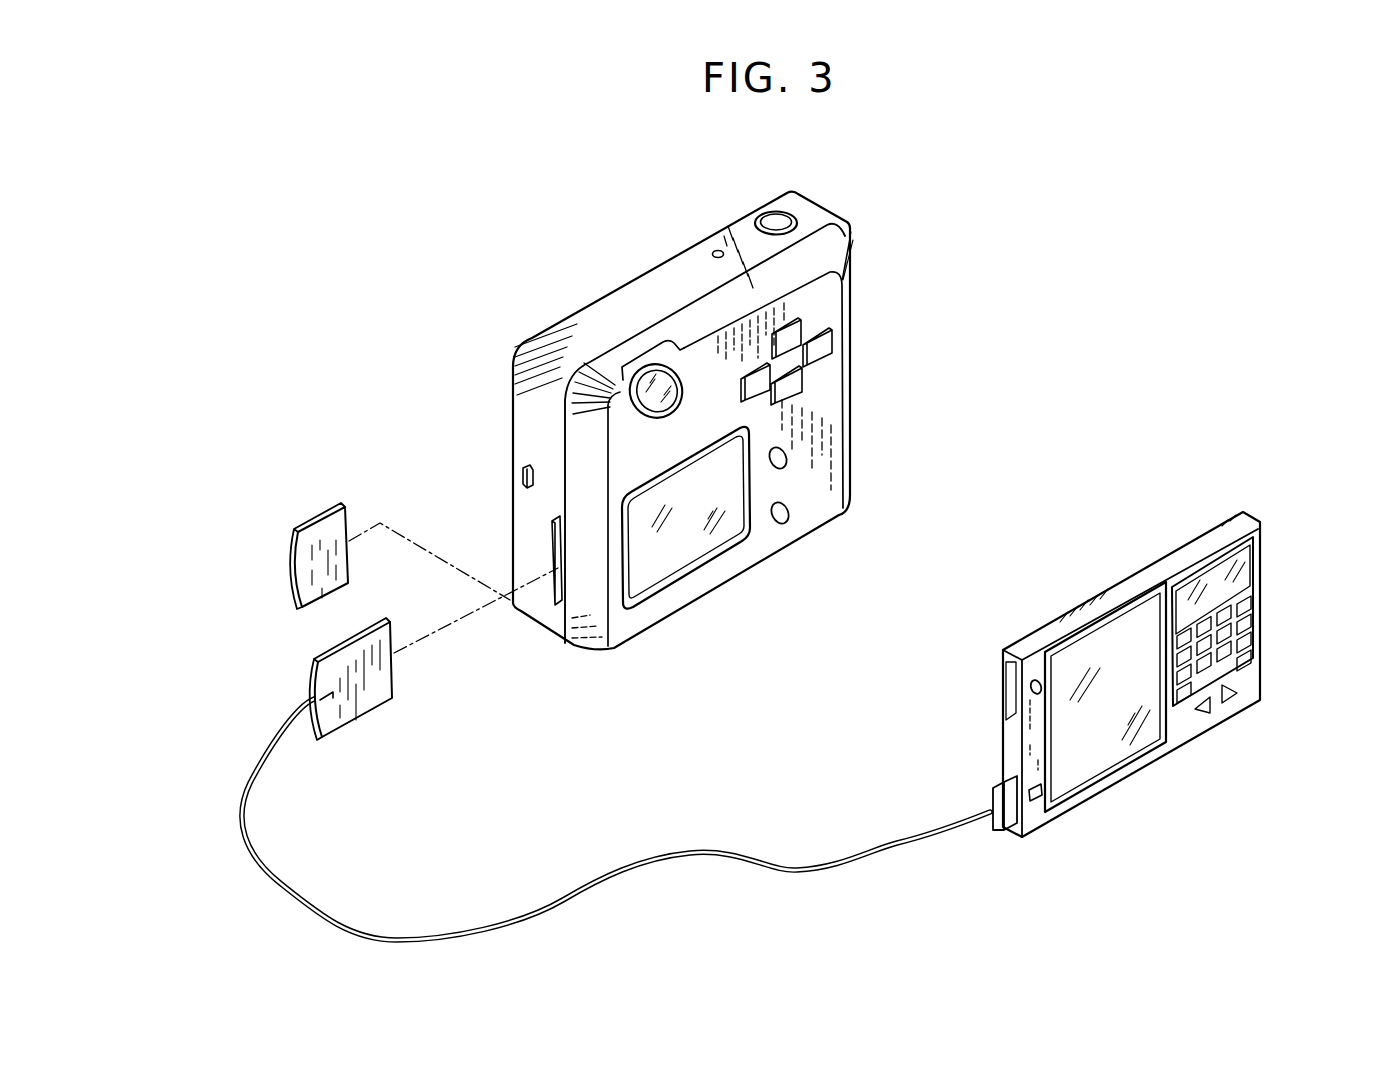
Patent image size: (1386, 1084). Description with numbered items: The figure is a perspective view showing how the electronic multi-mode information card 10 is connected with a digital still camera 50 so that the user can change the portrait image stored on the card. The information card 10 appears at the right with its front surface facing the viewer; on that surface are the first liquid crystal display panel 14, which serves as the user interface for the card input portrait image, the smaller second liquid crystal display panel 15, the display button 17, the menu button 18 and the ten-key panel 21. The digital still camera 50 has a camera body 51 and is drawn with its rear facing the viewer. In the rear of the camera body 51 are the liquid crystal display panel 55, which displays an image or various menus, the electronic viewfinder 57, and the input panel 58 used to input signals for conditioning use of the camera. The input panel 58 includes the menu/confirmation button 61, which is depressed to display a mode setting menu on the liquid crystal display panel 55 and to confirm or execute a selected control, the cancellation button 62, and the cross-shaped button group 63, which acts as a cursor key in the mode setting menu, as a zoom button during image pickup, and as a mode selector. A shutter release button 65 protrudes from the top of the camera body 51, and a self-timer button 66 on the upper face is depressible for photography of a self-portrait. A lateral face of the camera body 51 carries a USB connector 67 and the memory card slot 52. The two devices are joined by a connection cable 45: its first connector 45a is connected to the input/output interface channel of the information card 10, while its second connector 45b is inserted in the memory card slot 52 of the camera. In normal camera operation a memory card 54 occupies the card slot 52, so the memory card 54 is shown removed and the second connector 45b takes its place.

The electronic multi-mode information card 10 is at (1146, 561).
The first liquid crystal display panel 14 is at (1120, 753).
The second liquid crystal display panel 15 is at (1243, 553).
The display button 17 is at (1035, 678).
The menu button 18 is at (1035, 800).
The ten-key panel 21 is at (1236, 628).
The connection cable 45 is at (686, 852).
The first connector 45a is at (1000, 833).
The second connector 45b is at (367, 702).
The digital still camera 50 is at (632, 273).
The camera body 51 is at (538, 405).
The memory card slot 52 is at (563, 582).
The memory card 54 is at (322, 514).
The liquid crystal display panel 55 is at (687, 557).
The electronic viewfinder 57 is at (655, 378).
The input panel 58 is at (920, 352).
The menu/confirmation button 61 is at (787, 460).
The cancellation button 62 is at (787, 517).
The cross-shaped button group 63 is at (758, 384).
The shutter release button 65 is at (776, 216).
The self-timer button 66 is at (718, 248).
The USB connector 67 is at (522, 477).